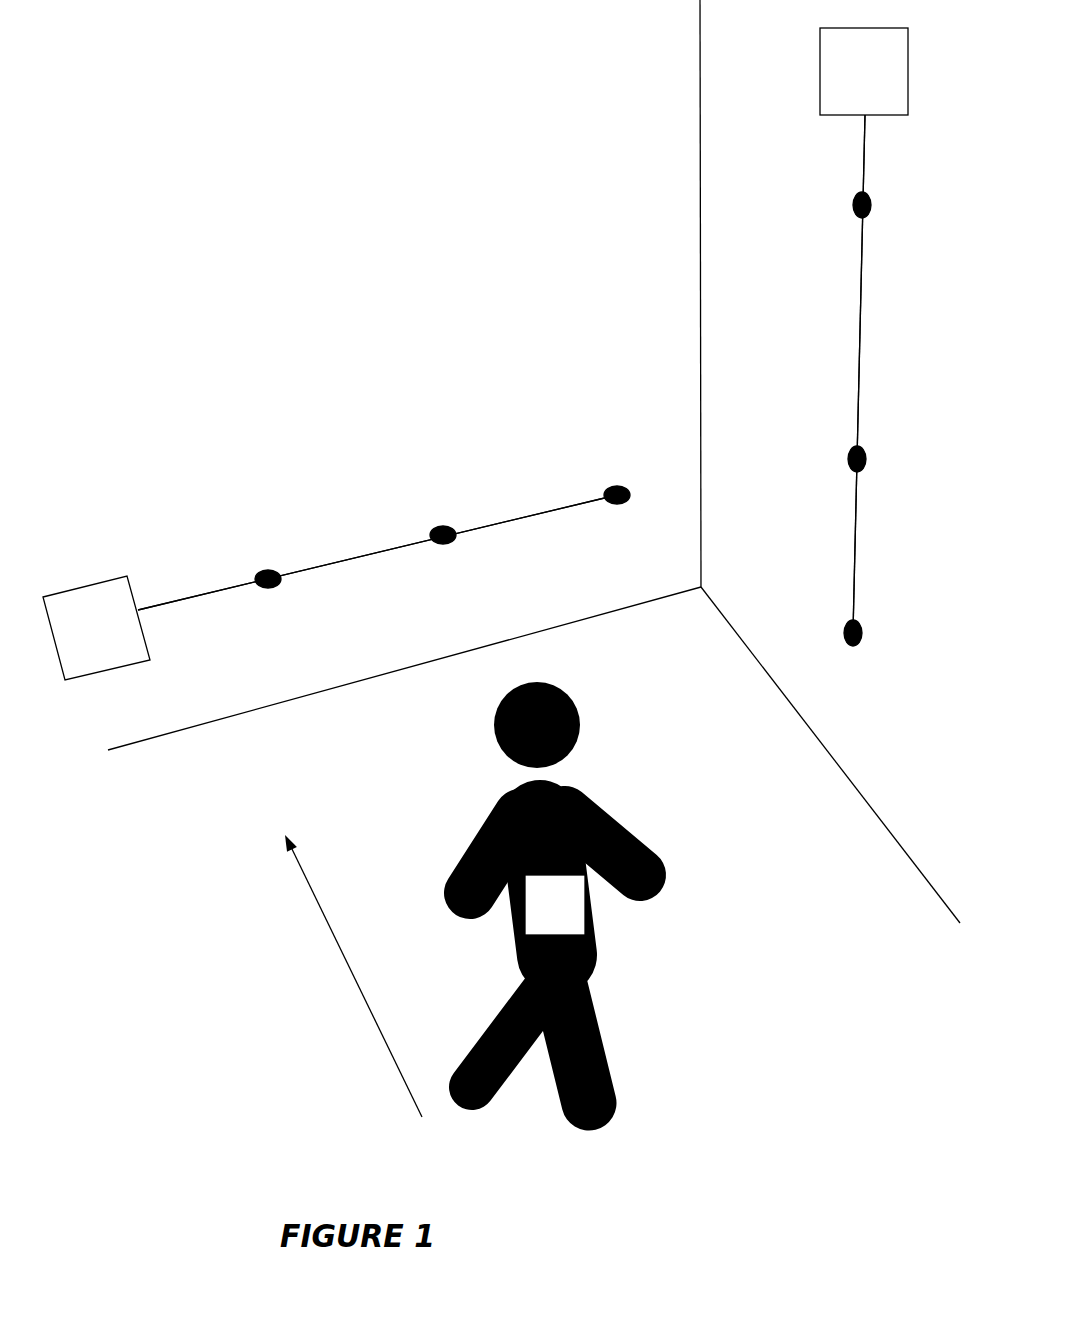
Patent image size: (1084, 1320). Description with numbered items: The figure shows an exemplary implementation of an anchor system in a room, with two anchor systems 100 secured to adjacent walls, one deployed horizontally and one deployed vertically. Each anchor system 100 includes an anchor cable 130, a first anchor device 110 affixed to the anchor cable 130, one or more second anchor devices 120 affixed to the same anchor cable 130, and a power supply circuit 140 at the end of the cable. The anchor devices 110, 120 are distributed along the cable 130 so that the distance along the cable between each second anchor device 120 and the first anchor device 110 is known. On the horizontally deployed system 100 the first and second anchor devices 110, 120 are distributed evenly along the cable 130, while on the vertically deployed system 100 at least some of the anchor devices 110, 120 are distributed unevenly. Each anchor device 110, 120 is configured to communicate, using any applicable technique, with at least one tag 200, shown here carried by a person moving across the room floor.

The anchor system 100 is at (376, 466).
The first anchor device 110 is at (621, 487).
The second anchor device 120 is at (276, 571).
The anchor cable 130 is at (185, 593).
The power supply circuit 140 is at (475, 354).
The tag 200 is at (555, 905).